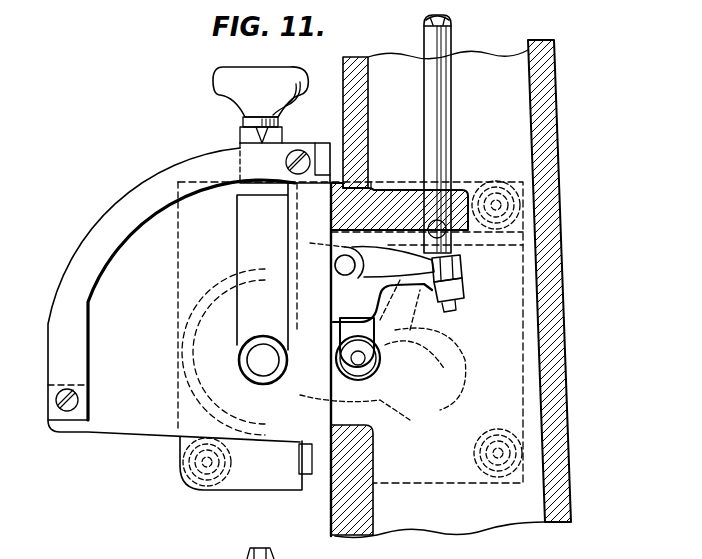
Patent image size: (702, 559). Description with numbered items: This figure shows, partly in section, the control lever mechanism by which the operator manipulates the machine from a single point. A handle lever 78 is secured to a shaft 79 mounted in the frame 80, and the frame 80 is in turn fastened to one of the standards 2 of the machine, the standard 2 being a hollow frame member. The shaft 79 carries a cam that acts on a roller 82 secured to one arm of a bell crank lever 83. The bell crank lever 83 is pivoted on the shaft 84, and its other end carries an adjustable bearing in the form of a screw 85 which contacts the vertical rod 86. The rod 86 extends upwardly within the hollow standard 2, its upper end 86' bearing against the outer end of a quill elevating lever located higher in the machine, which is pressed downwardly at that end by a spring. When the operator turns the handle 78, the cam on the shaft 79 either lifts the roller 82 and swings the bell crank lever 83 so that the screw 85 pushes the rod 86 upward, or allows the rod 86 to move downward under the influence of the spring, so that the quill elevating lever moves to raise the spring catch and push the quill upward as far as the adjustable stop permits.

The standard 2 is at (553, 400).
The handle lever 78 is at (222, 77).
The shaft 79 is at (262, 360).
The frame 80 is at (105, 415).
The roller 82 is at (335, 361).
The bell crank lever 83 is at (356, 300).
The shaft 84 is at (318, 264).
The screw 85 is at (452, 298).
The vertical rod 86 is at (465, 134).
The rod end 86' is at (469, 19).